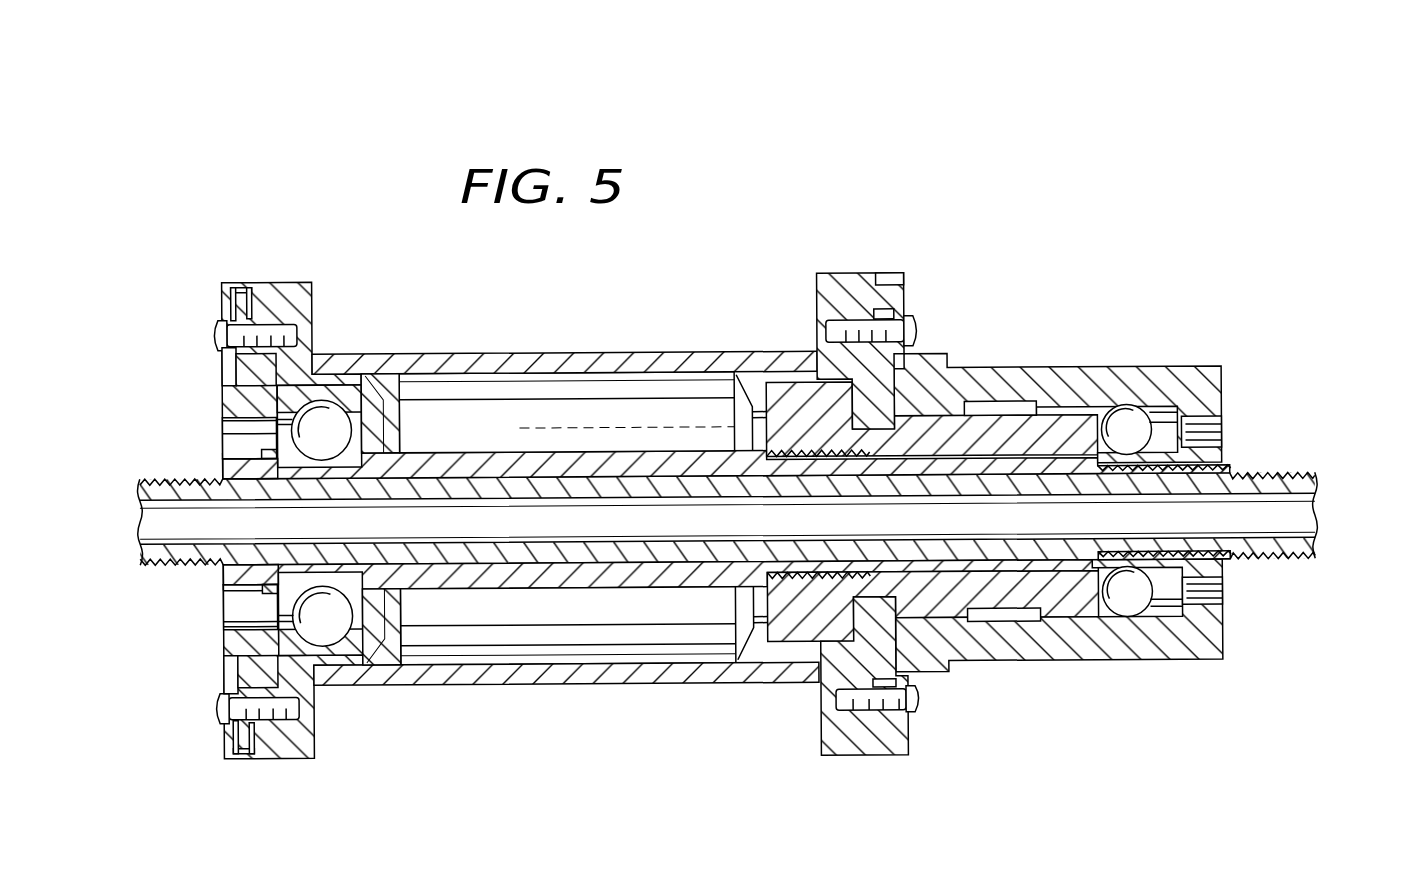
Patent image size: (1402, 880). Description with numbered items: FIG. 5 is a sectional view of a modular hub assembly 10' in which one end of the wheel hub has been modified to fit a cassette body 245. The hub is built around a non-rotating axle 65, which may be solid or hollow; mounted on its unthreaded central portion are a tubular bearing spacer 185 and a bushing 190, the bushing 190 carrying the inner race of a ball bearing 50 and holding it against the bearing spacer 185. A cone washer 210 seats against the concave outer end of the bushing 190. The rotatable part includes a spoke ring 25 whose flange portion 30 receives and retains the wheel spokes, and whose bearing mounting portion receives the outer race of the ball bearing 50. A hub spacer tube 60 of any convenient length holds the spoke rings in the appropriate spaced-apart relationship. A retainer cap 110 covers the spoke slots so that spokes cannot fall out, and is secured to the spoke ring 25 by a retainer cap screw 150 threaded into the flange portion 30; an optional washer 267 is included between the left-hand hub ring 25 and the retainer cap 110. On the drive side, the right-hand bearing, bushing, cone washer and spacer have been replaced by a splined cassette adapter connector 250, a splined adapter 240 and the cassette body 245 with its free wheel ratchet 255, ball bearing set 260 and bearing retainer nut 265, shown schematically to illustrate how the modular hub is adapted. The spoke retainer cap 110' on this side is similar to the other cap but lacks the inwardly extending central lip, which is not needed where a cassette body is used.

The modular hub assembly 10' is at (726, 275).
The spoke ring 25 is at (302, 279).
The flange portion 30 is at (225, 329).
The ball bearing 50 is at (362, 378).
The hub spacer tube 60 is at (483, 353).
The axle 65 is at (555, 562).
The retainer cap 110 is at (265, 487).
The spoke retainer cap 110' is at (898, 507).
The retainer cap screw 150 is at (222, 339).
The tubular bearing spacer 185 is at (638, 588).
The bushing 190 is at (238, 451).
The cone washer 210 is at (226, 584).
The splined adapter 240 is at (882, 378).
The cassette body 245 is at (1033, 372).
The splined cassette adapter connector 250 is at (800, 405).
The free wheel ratchet 255 is at (1042, 408).
The ball bearing set 260 is at (1215, 431).
The bearing retainer nut 265 is at (1228, 474).
The washer 267 is at (232, 376).